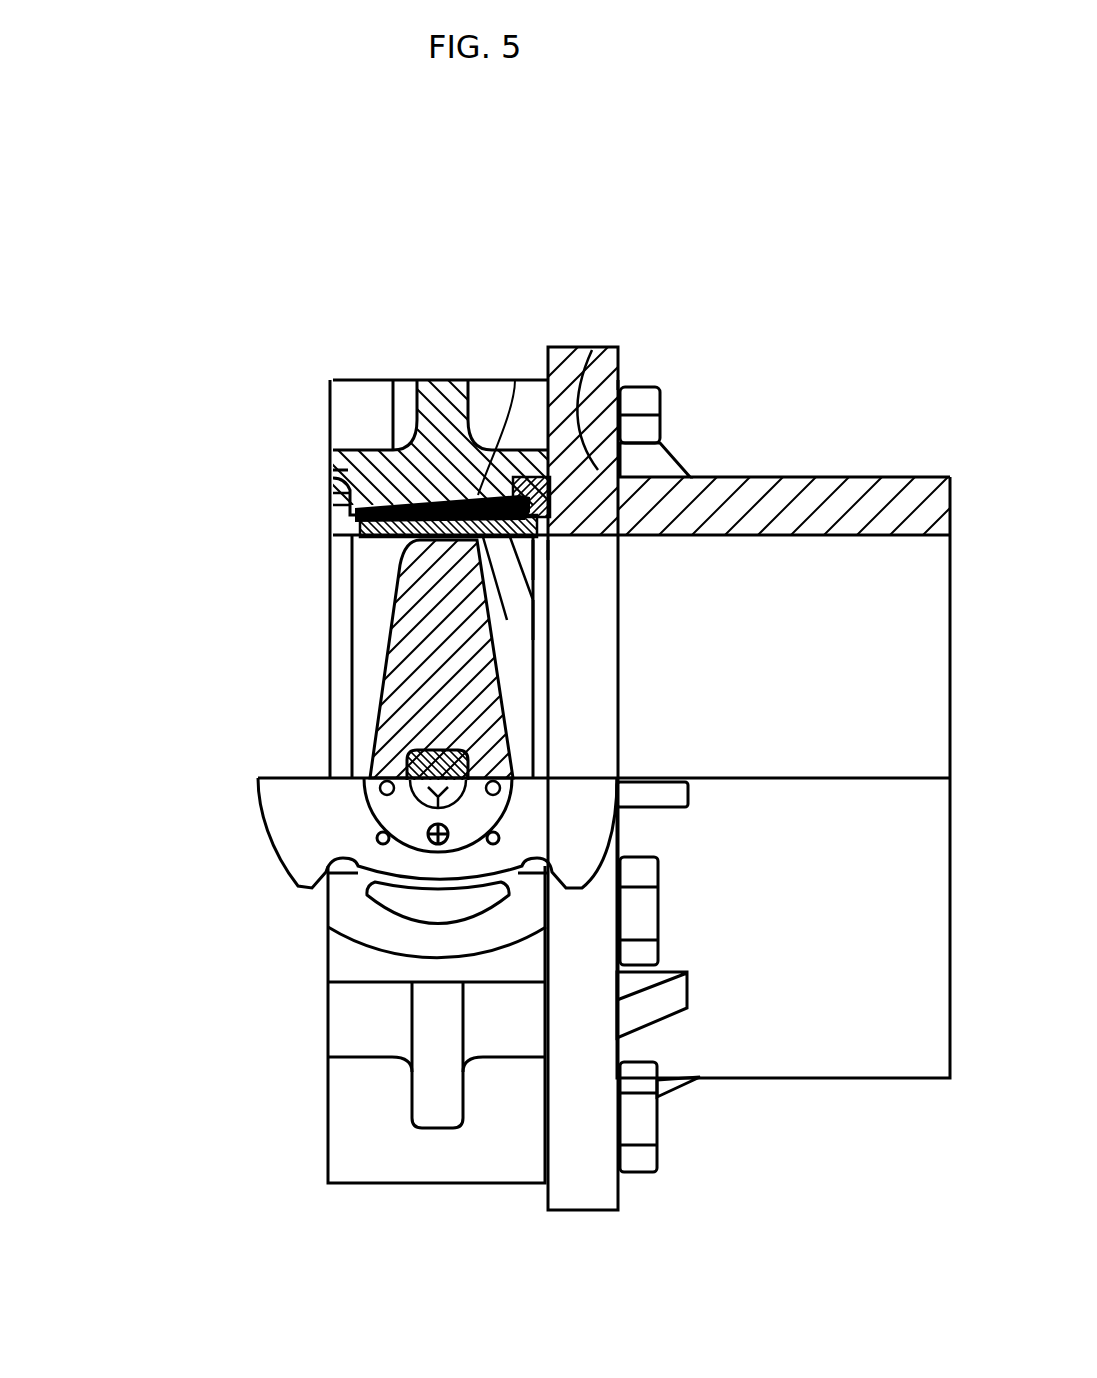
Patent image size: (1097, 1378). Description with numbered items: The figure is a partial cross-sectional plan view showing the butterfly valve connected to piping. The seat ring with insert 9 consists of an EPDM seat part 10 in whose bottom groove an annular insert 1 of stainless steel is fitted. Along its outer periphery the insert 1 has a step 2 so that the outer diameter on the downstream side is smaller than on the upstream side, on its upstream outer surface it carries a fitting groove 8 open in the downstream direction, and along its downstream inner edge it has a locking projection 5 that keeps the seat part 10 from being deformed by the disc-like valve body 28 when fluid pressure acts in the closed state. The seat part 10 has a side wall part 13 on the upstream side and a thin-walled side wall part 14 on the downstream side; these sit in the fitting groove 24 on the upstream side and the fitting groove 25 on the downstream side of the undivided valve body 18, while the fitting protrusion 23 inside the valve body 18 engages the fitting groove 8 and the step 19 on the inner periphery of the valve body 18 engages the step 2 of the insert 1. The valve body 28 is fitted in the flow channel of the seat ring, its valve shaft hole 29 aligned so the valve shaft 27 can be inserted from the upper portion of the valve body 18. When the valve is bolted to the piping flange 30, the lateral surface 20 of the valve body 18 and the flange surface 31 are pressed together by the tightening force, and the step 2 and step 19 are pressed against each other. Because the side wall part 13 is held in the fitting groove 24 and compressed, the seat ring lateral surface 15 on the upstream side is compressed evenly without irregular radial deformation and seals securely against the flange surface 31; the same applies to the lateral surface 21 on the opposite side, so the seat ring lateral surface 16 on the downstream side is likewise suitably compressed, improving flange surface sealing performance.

The insert 1 is at (330, 517).
The step 2 is at (530, 600).
The locking projection 5 is at (345, 557).
The fitting groove 8 is at (548, 580).
The seat ring with insert 9 is at (550, 550).
The seat part 10 is at (545, 630).
The side wall part on the upstream side 13 is at (553, 483).
The side wall part on the downstream side 14 is at (333, 493).
The seat ring lateral surface on the upstream side 15 is at (688, 476).
The seat ring lateral surface on the downstream side 16 is at (333, 498).
The valve body 18 is at (413, 378).
The step 19 is at (387, 380).
The lateral surface 20 is at (620, 388).
The lateral surface 21 is at (333, 482).
The fitting protrusion 23 is at (515, 380).
The fitting groove on the upstream side 24 is at (662, 392).
The fitting groove on the downstream side 25 is at (333, 487).
The valve shaft 27 is at (490, 762).
The valve body 28 is at (387, 708).
The valve shaft hole 29 is at (420, 748).
The piping flange 30 is at (590, 348).
The flange surface 31 is at (540, 372).